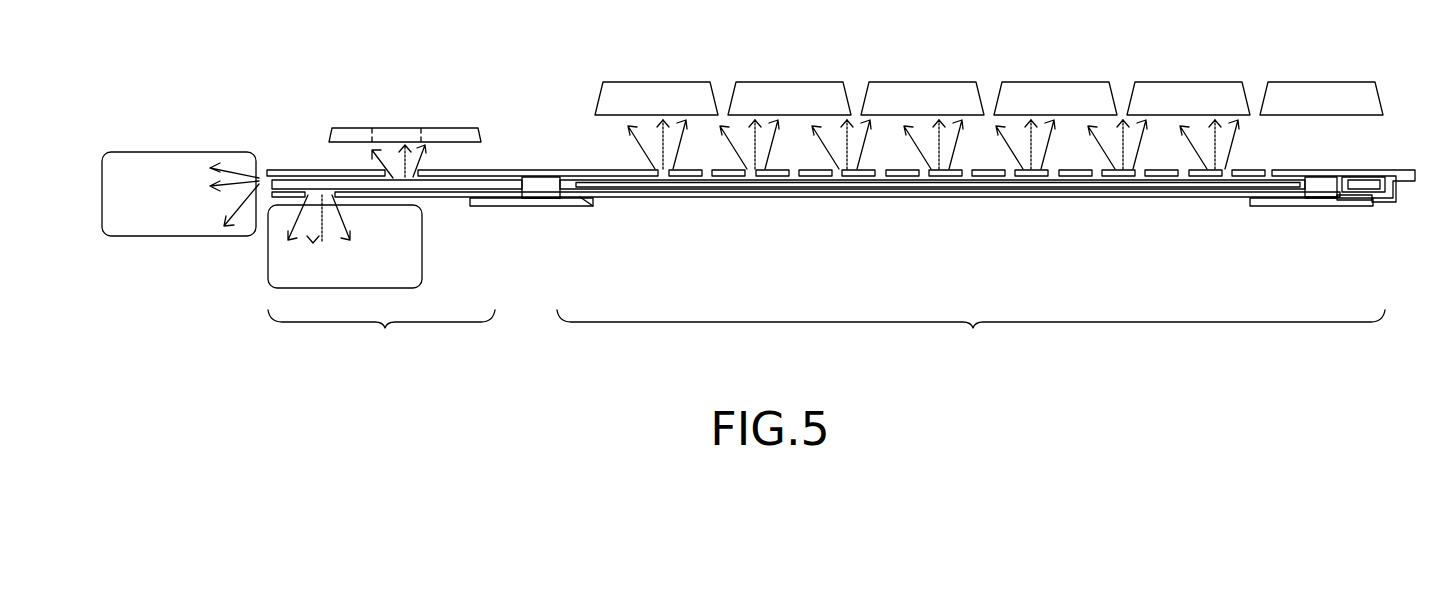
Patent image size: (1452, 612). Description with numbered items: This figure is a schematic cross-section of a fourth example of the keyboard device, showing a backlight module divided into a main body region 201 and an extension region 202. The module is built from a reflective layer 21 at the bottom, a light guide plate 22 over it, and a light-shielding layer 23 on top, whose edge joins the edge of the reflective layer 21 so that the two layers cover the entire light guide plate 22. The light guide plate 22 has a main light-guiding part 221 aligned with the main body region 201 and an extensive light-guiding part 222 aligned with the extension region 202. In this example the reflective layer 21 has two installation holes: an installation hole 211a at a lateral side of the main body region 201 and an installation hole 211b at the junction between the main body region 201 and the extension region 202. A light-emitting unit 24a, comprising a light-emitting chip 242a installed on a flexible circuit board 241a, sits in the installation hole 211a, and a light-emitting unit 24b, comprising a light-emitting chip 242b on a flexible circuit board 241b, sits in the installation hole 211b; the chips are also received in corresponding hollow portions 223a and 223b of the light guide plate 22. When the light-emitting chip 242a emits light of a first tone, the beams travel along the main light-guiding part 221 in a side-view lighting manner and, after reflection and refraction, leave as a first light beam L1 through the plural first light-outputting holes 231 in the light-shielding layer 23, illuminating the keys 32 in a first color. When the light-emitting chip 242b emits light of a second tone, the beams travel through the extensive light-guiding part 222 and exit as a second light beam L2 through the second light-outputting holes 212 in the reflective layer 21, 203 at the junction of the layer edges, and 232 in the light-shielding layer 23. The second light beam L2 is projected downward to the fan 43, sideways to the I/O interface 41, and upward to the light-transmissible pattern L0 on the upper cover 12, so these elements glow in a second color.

The I/O interface 41 is at (173, 163).
The fan 43 is at (278, 253).
The upper cover 12 is at (352, 130).
The light-transmissible pattern L0 is at (407, 133).
The first light beam L1 is at (658, 167).
The second light beam L2 is at (423, 148).
The second light-outputting hole 212 is at (308, 197).
The second light-outputting hole 203 is at (263, 197).
The extensive light-guiding part 222 is at (415, 187).
The second light-outputting hole 232 is at (388, 178).
The hollow portion 223b is at (532, 177).
The light-emitting chip 242b is at (542, 188).
The light-emitting unit 24b is at (513, 207).
The flexible circuit board 241b is at (548, 207).
The installation hole 211b is at (592, 207).
The reflective layer 21 is at (710, 193).
The main light-guiding part 221 is at (1000, 180).
The light guide plate 22 is at (810, 185).
The keys 32 is at (635, 90).
The first light-outputting holes 231 is at (920, 176).
The light-emitting chip 242a is at (1320, 178).
The hollow portion 223a is at (1348, 170).
The light-shielding layer 23 is at (1363, 172).
The light-emitting unit 24a is at (1292, 204).
The flexible circuit board 241a is at (1320, 200).
The installation hole 211a is at (1357, 202).
The extension region 202 is at (381, 335).
The main body region 201 is at (971, 336).